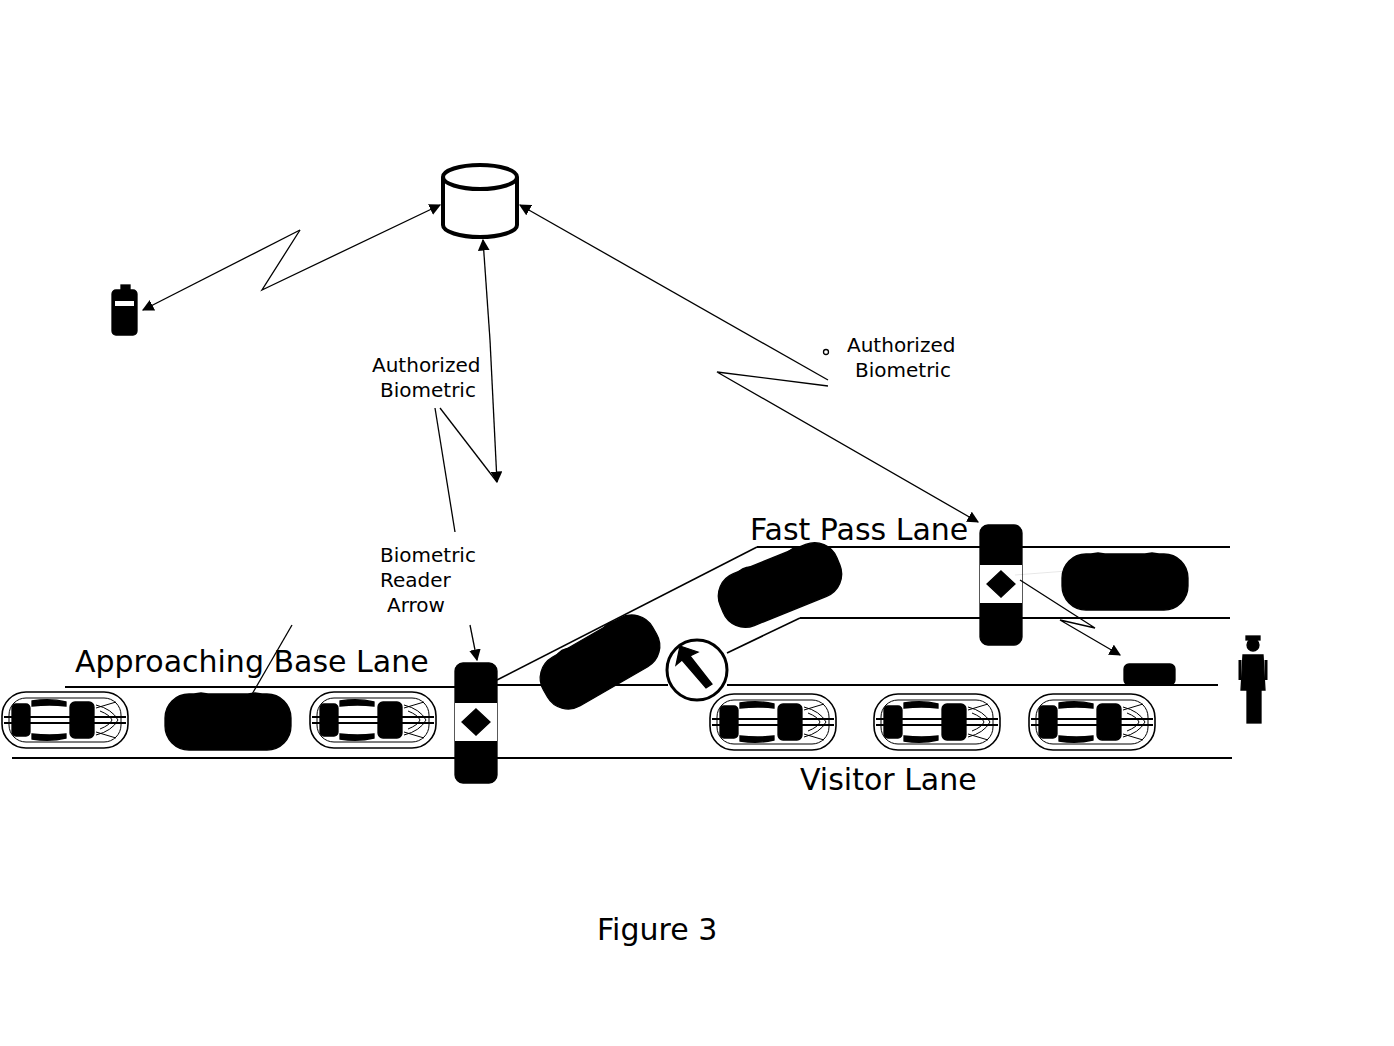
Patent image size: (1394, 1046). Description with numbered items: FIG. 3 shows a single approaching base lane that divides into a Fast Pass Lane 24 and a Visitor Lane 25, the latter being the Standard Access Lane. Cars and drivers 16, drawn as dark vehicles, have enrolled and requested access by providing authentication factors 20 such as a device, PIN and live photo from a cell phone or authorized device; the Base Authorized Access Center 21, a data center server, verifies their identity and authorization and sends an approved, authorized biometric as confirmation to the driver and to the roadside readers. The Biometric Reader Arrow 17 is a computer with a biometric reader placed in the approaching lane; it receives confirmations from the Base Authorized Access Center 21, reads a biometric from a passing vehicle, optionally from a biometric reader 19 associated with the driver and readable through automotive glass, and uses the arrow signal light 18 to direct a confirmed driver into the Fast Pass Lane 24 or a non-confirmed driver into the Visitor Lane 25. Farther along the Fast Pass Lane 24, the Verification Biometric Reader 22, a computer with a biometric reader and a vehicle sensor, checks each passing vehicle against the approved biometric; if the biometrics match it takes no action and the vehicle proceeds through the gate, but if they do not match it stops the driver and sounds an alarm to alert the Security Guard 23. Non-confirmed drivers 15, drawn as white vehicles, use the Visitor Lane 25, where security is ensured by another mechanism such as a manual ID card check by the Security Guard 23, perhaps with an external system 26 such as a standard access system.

The non-confirmed drivers 15 is at (53, 760).
The cars and drivers 16 is at (228, 758).
The Biometric Reader Arrow 17 is at (476, 785).
The arrow signal light 18 is at (680, 700).
The biometric reader 19 is at (245, 600).
The authentication factors 20 is at (130, 285).
The Base Authorized Access Center 21 is at (483, 165).
The Verification Biometric Reader 22 is at (491, 660).
The Security Guard 23 is at (1268, 657).
The Fast Pass Lane 24 is at (905, 592).
The Visitor Lane 25 is at (860, 740).
The external system 26 is at (1178, 686).